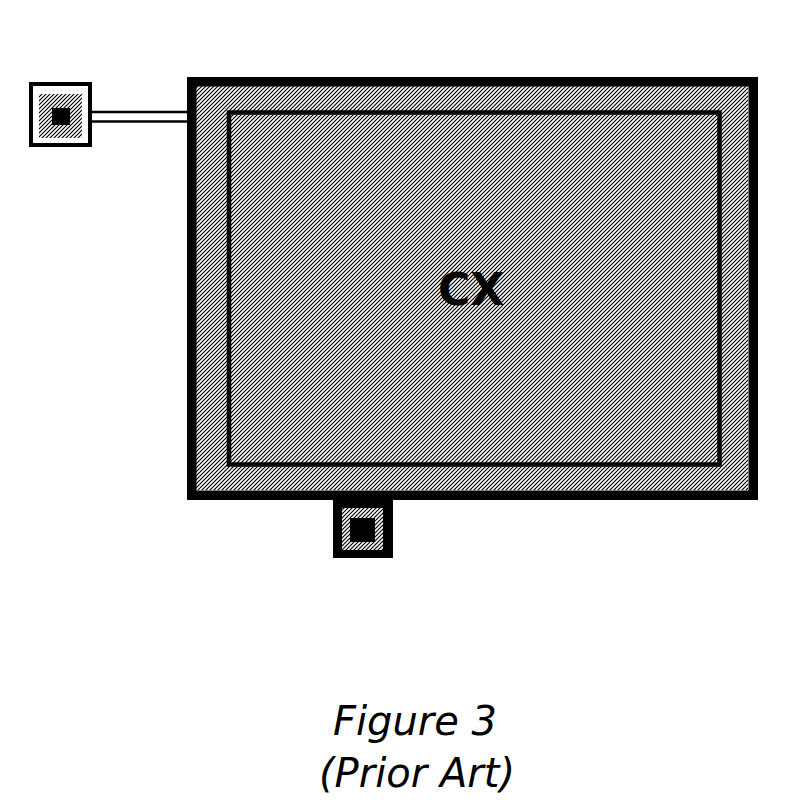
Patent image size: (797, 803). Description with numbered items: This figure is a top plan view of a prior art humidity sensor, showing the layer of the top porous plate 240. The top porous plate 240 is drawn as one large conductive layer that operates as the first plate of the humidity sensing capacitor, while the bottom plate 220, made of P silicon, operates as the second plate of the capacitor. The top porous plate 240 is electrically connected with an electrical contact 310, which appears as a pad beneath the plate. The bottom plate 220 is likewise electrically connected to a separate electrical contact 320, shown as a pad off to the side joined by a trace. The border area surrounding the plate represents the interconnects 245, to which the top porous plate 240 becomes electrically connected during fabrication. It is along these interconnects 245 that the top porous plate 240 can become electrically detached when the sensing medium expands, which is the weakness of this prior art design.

The bottom plate 220 is at (505, 110).
The top porous plate 240 is at (513, 475).
The interconnects 245 is at (382, 77).
The electrical contact 310 is at (380, 568).
The electrical contact 320 is at (92, 90).